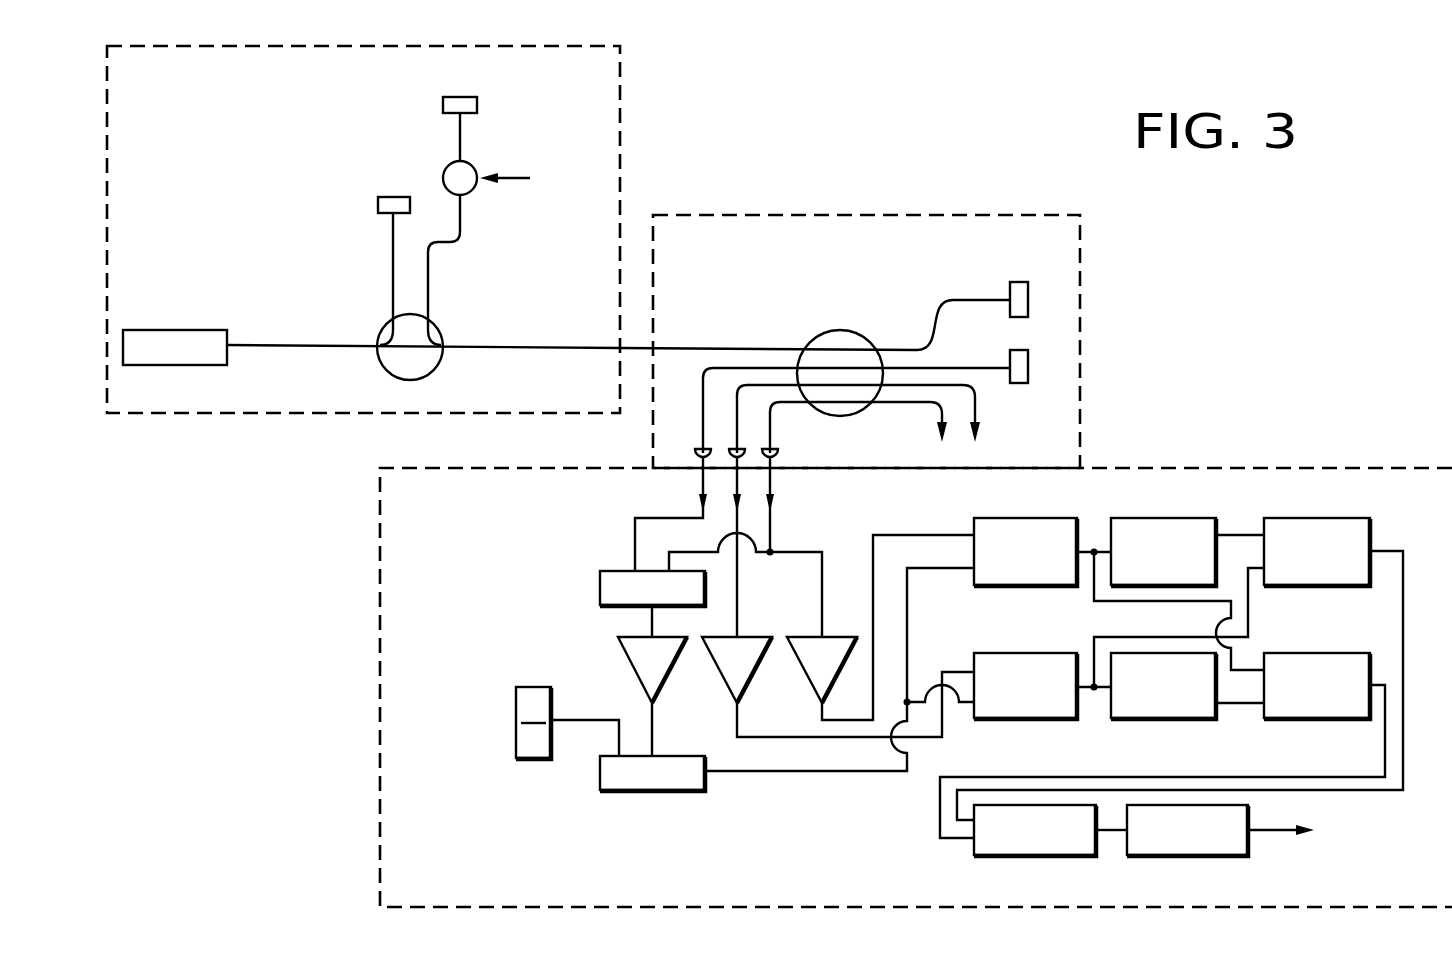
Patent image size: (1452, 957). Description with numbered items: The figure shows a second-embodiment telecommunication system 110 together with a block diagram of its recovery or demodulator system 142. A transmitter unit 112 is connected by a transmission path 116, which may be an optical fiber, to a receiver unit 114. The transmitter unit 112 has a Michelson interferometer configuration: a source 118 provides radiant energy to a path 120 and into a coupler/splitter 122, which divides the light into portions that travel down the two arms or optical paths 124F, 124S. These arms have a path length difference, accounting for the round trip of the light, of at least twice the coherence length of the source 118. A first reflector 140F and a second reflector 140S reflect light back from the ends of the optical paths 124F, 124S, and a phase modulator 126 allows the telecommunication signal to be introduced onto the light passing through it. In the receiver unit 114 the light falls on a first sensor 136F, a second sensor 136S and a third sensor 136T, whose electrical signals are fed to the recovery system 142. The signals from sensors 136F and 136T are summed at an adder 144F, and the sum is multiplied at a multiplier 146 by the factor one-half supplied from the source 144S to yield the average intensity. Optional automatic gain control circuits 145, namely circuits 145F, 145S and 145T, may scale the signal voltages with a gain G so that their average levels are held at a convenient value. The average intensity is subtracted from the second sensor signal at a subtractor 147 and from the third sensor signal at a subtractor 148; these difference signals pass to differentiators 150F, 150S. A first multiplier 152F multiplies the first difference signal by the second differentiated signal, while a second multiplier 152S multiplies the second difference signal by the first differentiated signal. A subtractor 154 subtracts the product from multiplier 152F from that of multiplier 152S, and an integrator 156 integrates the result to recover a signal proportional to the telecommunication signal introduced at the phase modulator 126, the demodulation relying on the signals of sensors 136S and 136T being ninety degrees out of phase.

The telecommunication system 110 is at (766, 165).
The transmitter unit 112 is at (622, 147).
The receiver unit 114 is at (893, 213).
The transmission path 116 is at (632, 350).
The source 118 is at (198, 328).
The path 120 is at (327, 345).
The coupler/splitter 122 is at (440, 330).
The first optical path 124F is at (392, 270).
The second optical path 124S is at (428, 287).
The phase modulator 126 is at (445, 173).
The first sensor 136F is at (695, 453).
The second sensor 136S is at (730, 457).
The third sensor 136T is at (778, 455).
The first reflector 140F is at (393, 195).
The second reflector 140S is at (467, 97).
The recovery system 142 is at (380, 632).
The adder 144F is at (619, 569).
The source of one-half 144S is at (516, 714).
The automatic gain control circuits 145 is at (723, 631).
The first automatic gain control circuit 145F is at (644, 687).
The second automatic gain control circuit 145S is at (745, 639).
The third automatic gain control circuit 145T is at (839, 637).
The multiplier 146 is at (659, 792).
The subtractor 147 is at (1051, 518).
The subtractor 148 is at (1035, 653).
The differentiator 150S is at (1183, 518).
The differentiator 150F is at (1200, 718).
The second multiplier 152S is at (1337, 518).
The first multiplier 152F is at (1283, 653).
The subtractor 154 is at (1048, 855).
The integrator 156 is at (1216, 855).